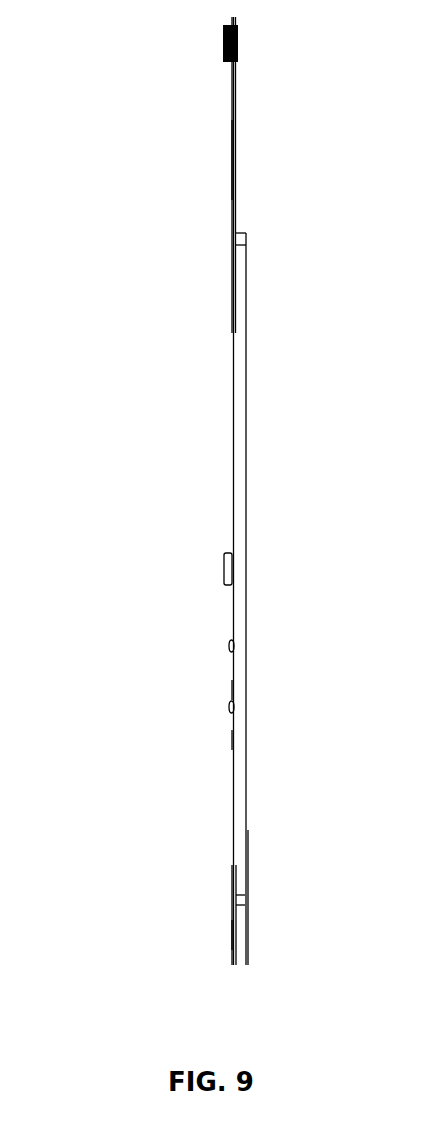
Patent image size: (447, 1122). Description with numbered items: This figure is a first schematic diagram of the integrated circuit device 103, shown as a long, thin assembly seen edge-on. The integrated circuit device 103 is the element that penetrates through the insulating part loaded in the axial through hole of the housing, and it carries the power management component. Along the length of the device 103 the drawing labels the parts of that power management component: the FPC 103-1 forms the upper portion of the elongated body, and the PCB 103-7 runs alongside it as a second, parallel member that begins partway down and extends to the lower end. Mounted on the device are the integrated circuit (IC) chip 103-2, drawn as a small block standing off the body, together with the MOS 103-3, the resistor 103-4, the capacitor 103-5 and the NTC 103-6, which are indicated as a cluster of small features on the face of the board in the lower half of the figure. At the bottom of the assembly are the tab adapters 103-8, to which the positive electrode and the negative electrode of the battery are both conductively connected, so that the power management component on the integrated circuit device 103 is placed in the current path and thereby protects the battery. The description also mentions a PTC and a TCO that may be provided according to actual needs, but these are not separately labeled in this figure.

The integrated circuit device 103 is at (278, 88).
The FPC 103-1 is at (232, 160).
The integrated circuit (IC) chip 103-2 is at (226, 566).
The MOS 103-3 is at (232, 655).
The resistor 103-4 is at (232, 690).
The capacitor 103-5 is at (232, 720).
The NTC 103-6 is at (232, 740).
The PCB 103-7 is at (246, 451).
The tab adapters 103-8 is at (232, 934).